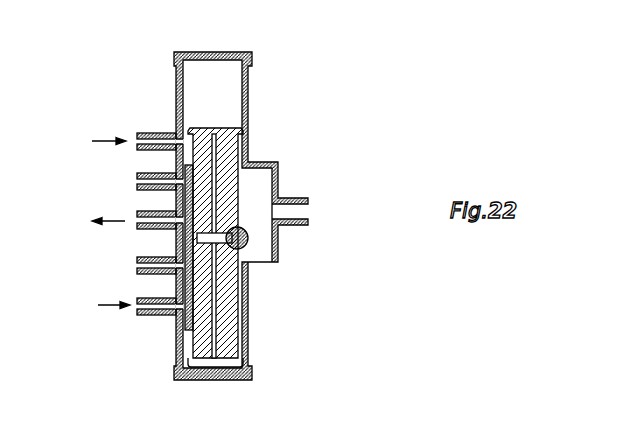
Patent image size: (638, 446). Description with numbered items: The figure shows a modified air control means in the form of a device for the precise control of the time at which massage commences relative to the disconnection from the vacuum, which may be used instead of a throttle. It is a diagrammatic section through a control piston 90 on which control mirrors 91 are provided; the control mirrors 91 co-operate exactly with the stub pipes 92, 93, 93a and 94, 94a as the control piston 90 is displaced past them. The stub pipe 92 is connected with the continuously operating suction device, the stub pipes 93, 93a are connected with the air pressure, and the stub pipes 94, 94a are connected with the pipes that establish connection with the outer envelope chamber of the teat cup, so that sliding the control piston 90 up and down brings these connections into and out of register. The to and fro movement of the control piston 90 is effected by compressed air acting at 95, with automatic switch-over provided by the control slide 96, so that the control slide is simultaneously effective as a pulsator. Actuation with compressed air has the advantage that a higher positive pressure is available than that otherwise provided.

The control piston 90 is at (232, 325).
The control mirrors 91 is at (235, 195).
The stub pipe 92 is at (137, 228).
The stub pipe 93 is at (137, 311).
The stub pipe 93a is at (137, 135).
The stub pipe 94 is at (137, 270).
The stub pipe 94a is at (137, 185).
The compressed air connection 95 is at (308, 211).
The control slide 96 is at (247, 240).